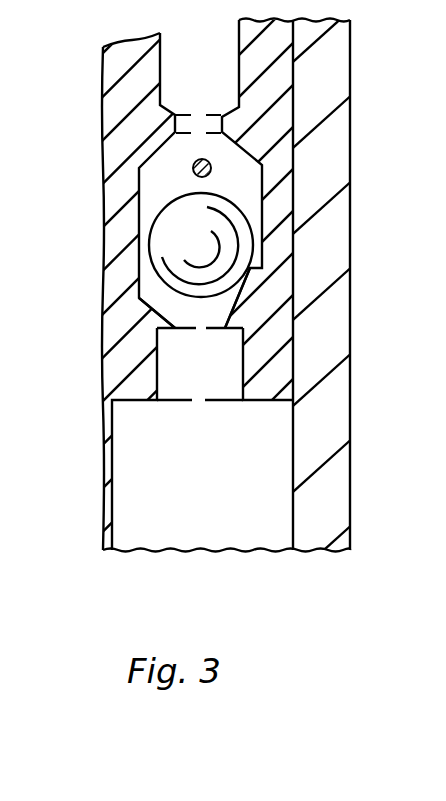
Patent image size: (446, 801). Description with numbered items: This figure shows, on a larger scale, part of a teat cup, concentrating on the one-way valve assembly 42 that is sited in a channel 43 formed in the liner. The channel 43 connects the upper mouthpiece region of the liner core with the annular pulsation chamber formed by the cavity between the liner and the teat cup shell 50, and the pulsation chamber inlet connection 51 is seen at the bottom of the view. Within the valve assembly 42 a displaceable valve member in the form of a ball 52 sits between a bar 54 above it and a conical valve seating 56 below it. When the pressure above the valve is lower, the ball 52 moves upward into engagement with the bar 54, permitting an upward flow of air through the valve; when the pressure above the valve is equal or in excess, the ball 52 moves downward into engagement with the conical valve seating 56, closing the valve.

The one-way valve assembly 42 is at (86, 233).
The channel 43 is at (197, 70).
The teat cup shell 50 is at (323, 518).
The pulsation chamber inlet connection 51 is at (177, 370).
The ball 52 is at (177, 245).
The bar 54 is at (193, 168).
The conical valve seating 56 is at (169, 306).